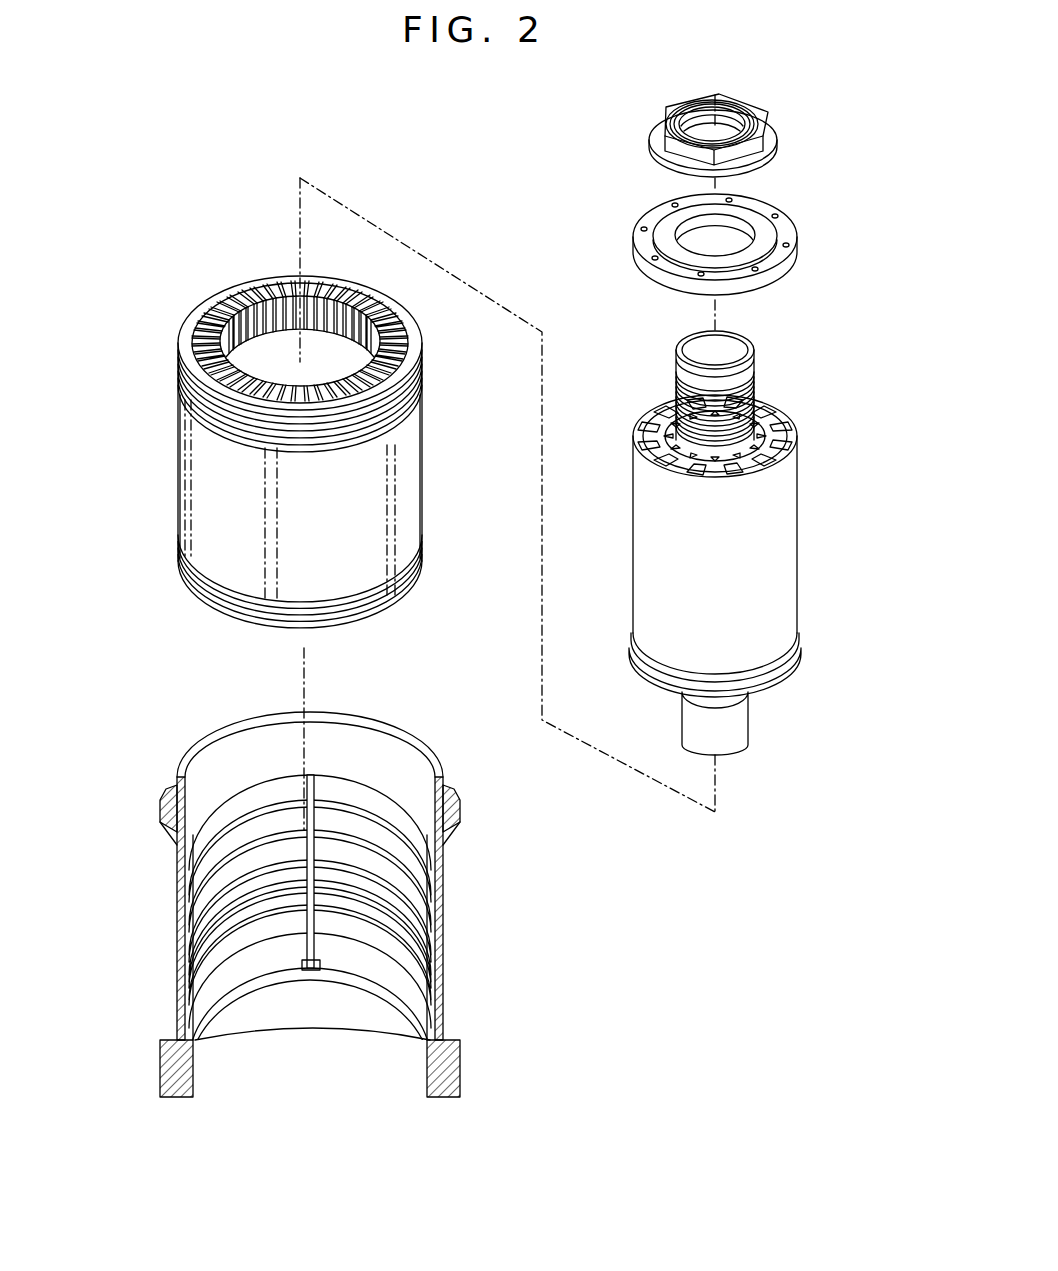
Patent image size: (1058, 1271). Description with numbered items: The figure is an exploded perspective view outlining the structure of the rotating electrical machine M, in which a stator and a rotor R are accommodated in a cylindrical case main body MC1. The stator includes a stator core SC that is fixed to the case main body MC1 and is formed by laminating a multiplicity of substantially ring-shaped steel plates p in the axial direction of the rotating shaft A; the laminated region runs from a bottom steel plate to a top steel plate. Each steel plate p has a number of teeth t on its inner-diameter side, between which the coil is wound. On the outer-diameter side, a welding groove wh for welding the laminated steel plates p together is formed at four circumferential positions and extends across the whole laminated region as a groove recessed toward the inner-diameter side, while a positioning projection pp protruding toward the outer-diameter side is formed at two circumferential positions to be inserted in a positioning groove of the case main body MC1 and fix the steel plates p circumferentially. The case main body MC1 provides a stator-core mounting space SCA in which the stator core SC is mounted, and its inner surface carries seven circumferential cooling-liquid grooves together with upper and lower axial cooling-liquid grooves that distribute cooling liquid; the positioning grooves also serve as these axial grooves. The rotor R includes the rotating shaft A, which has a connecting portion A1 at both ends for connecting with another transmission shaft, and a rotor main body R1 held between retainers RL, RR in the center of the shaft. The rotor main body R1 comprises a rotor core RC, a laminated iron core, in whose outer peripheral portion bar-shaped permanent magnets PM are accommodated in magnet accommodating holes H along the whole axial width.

The stator core SC is at (236, 255).
The positioning projection pp is at (205, 293).
The welding groove wh is at (327, 282).
The teeth t is at (382, 301).
The steel plate p is at (412, 421).
The stator-core mounting space SCA is at (342, 808).
The case main body MC1 is at (178, 902).
The rotating electrical machine M is at (662, 920).
The retainer RR is at (773, 240).
The rotor R is at (620, 294).
The connecting portion A1 is at (676, 347).
The rotating shaft A is at (772, 360).
The permanent magnet PM is at (648, 448).
The magnet accommodating hole H is at (787, 426).
The rotor main body R1 is at (628, 532).
The rotor core RC is at (789, 573).
The retainer RL is at (782, 672).